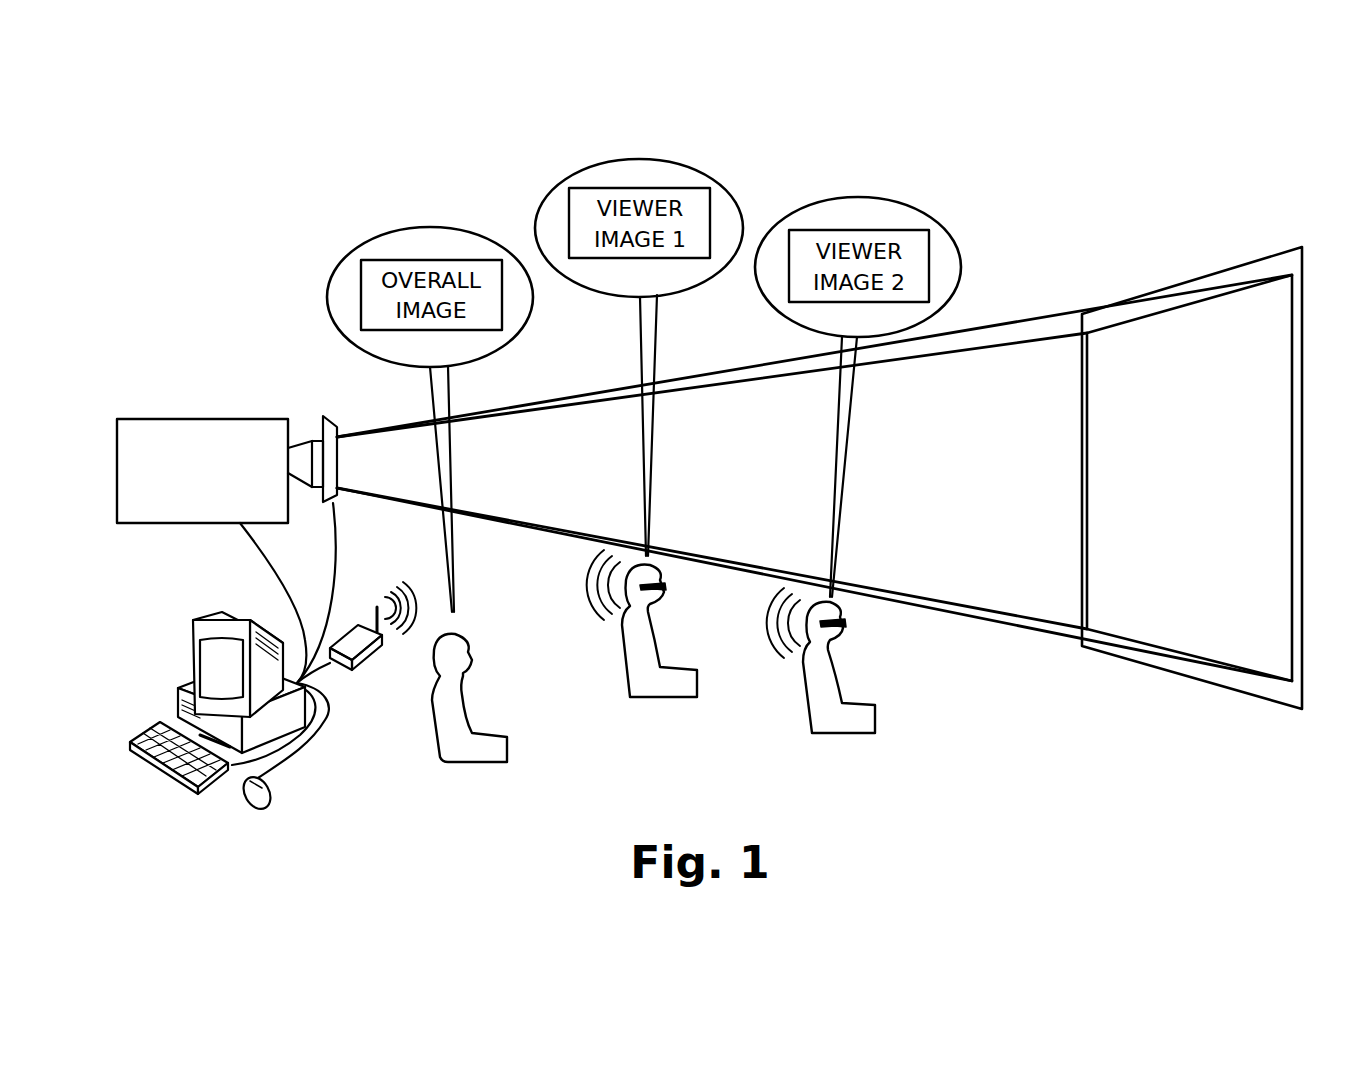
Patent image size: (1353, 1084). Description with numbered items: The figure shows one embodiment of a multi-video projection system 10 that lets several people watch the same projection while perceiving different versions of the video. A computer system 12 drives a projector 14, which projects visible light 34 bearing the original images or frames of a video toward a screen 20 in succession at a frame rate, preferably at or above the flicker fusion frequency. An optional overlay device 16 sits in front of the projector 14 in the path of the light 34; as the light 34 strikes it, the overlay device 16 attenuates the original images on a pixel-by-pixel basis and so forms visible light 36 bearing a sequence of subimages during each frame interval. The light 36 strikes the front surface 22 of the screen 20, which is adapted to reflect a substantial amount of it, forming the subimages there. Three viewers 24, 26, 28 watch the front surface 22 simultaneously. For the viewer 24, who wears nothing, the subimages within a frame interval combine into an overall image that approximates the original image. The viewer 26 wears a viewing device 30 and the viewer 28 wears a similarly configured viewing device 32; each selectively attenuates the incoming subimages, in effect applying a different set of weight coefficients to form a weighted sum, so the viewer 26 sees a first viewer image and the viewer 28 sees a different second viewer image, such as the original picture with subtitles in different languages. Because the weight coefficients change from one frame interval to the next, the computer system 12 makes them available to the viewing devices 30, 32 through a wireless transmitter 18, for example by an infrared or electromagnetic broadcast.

The multi-video projection system 10 is at (1092, 117).
The computer system 12 is at (180, 596).
The projector 14 is at (189, 499).
The overlay device 16 is at (330, 437).
The wireless transmitter 18 is at (373, 660).
The screen 20 is at (1149, 668).
The front surface 22 is at (1285, 263).
The viewer 24 is at (445, 705).
The viewer 26 is at (637, 625).
The viewer 28 is at (820, 668).
The viewing device 30 is at (663, 590).
The viewing device 32 is at (843, 627).
The visible light 34 is at (320, 440).
The visible light 36 is at (347, 432).